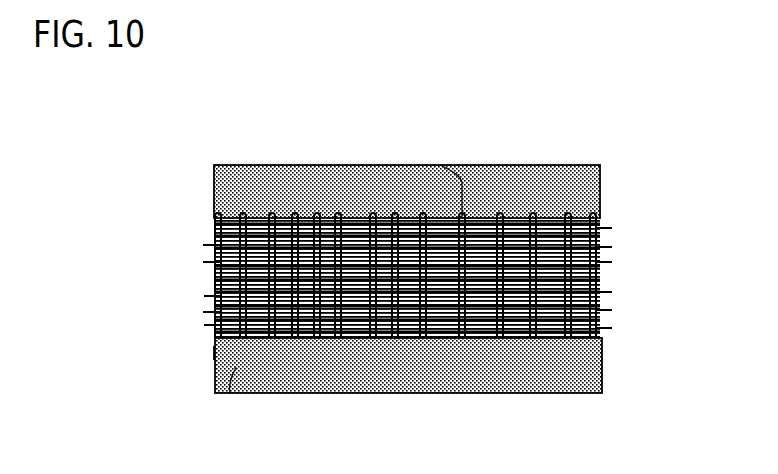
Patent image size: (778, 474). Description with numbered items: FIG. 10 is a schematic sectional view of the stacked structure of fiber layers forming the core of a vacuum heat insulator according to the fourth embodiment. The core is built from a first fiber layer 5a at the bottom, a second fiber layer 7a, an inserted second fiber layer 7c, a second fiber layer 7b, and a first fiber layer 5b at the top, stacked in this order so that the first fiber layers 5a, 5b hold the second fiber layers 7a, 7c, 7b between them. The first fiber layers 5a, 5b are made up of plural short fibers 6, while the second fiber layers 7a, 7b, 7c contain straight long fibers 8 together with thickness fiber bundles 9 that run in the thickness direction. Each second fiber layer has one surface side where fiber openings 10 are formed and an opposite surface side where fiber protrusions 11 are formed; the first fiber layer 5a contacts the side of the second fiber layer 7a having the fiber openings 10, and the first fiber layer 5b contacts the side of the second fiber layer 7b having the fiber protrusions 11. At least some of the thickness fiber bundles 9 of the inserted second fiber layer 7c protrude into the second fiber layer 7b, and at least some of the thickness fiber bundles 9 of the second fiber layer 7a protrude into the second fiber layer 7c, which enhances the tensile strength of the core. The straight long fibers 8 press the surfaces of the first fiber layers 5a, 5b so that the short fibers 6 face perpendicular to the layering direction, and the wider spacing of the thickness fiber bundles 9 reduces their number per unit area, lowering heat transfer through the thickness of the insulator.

The first fiber layer 5a is at (602, 385).
The first fiber layer 5b is at (600, 183).
The short fibers 6 is at (230, 393).
The second fiber layer 7a is at (597, 328).
The second fiber layer 7b is at (600, 228).
The second fiber layer 7c is at (598, 283).
The straight long fibers 8 is at (215, 325).
The thickness fiber bundles 9 is at (223, 263).
The fiber openings 10 is at (214, 353).
The fiber protrusions 11 is at (440, 165).